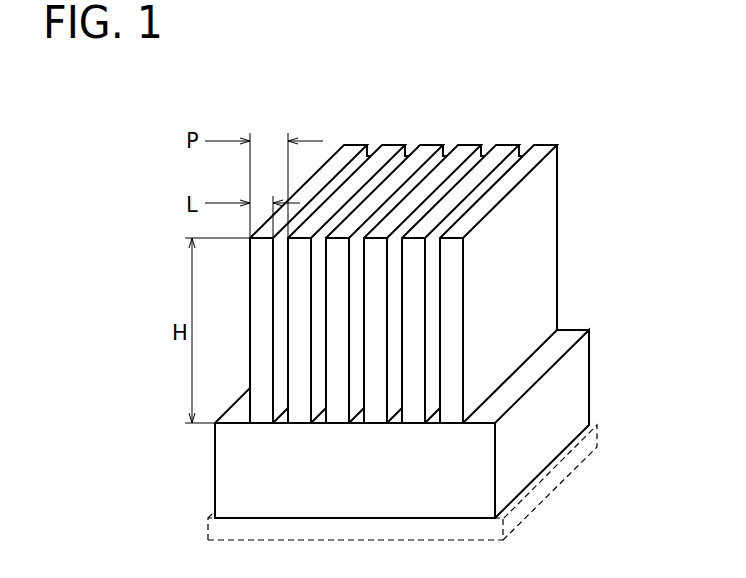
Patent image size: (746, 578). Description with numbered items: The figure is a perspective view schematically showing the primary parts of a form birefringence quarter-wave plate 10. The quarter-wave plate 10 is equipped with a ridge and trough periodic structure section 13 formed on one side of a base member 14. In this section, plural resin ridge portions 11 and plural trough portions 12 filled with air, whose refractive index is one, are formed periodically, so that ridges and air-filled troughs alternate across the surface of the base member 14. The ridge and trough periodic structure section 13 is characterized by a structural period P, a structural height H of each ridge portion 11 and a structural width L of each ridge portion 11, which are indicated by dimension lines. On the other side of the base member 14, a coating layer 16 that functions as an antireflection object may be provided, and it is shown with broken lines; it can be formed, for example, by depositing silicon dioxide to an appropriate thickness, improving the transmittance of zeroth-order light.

The form birefringence quarter-wave plate 10 is at (582, 140).
The resin ridge portion 11 is at (392, 147).
The trough portion 12 is at (448, 148).
The ridge and trough periodic structure section 13 is at (477, 80).
The base member 14 is at (580, 365).
The coating layer 16 is at (535, 490).